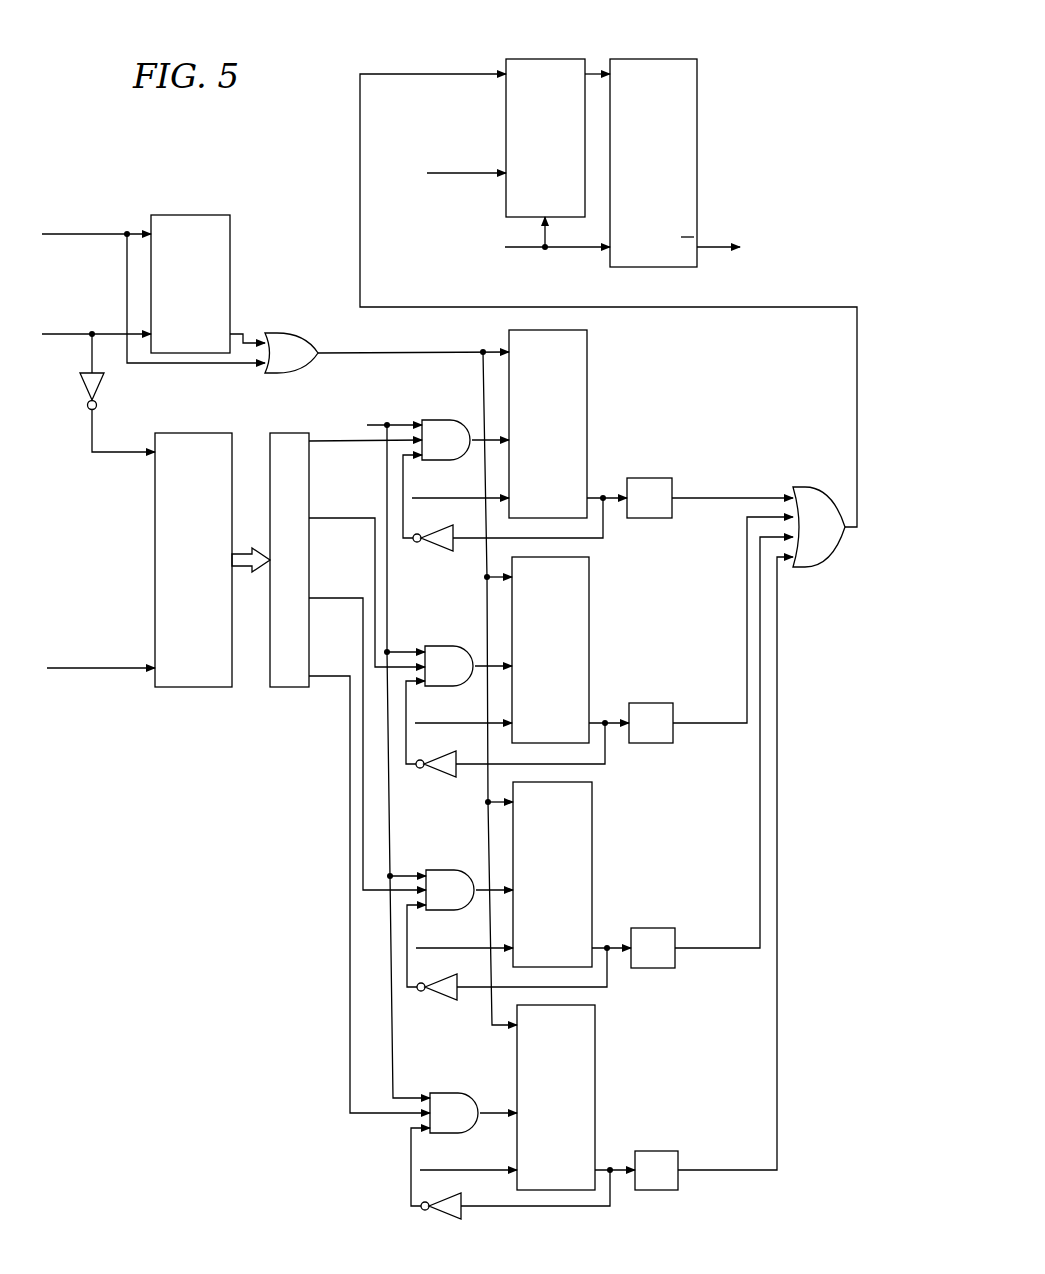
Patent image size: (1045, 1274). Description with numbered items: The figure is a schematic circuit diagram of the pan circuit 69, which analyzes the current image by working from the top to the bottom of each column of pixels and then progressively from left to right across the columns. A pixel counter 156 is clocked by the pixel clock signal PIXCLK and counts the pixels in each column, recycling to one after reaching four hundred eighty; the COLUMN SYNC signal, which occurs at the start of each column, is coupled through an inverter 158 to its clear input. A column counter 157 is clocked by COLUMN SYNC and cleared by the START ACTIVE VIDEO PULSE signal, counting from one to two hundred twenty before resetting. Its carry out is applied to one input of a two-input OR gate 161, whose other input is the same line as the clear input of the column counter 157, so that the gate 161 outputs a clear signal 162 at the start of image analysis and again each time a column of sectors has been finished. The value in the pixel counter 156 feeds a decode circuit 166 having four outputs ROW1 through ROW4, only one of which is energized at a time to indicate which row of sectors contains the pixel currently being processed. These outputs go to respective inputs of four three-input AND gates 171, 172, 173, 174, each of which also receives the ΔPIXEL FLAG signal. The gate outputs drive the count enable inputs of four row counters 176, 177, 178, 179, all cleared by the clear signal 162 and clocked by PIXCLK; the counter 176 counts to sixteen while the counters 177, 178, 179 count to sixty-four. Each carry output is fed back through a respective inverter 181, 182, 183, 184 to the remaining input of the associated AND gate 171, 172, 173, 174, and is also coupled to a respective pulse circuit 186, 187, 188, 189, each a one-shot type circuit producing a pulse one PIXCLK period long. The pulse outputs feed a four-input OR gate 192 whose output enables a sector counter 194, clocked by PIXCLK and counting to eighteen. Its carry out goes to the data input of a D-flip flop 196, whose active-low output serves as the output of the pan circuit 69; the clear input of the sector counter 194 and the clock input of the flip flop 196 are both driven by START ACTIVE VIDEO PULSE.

The pan circuit 69 is at (449, 630).
The pixel counter 156 is at (186, 688).
The column counter 157 is at (231, 250).
The inverter 158 is at (84, 388).
The two-input OR gate 161 is at (283, 332).
The clear signal 162 is at (343, 352).
The decode circuit 166 is at (292, 688).
The three-input AND gate 171 is at (440, 418).
The three-input AND gate 172 is at (443, 645).
The three-input AND gate 173 is at (444, 869).
The three-input AND gate 174 is at (448, 1092).
The row counter 176 is at (589, 394).
The row counter 177 is at (591, 620).
The row counter 178 is at (594, 845).
The row counter 179 is at (597, 1068).
The inverter 181 is at (430, 552).
The inverter 182 is at (433, 778).
The inverter 183 is at (434, 1001).
The inverter 184 is at (438, 1220).
The pulse circuit 186 is at (672, 510).
The pulse circuit 187 is at (673, 735).
The pulse circuit 188 is at (675, 960).
The pulse circuit 189 is at (678, 1183).
The four-input OR gate 192 is at (818, 501).
The sector counter 194 is at (506, 120).
The D-flip flop 196 is at (653, 57).